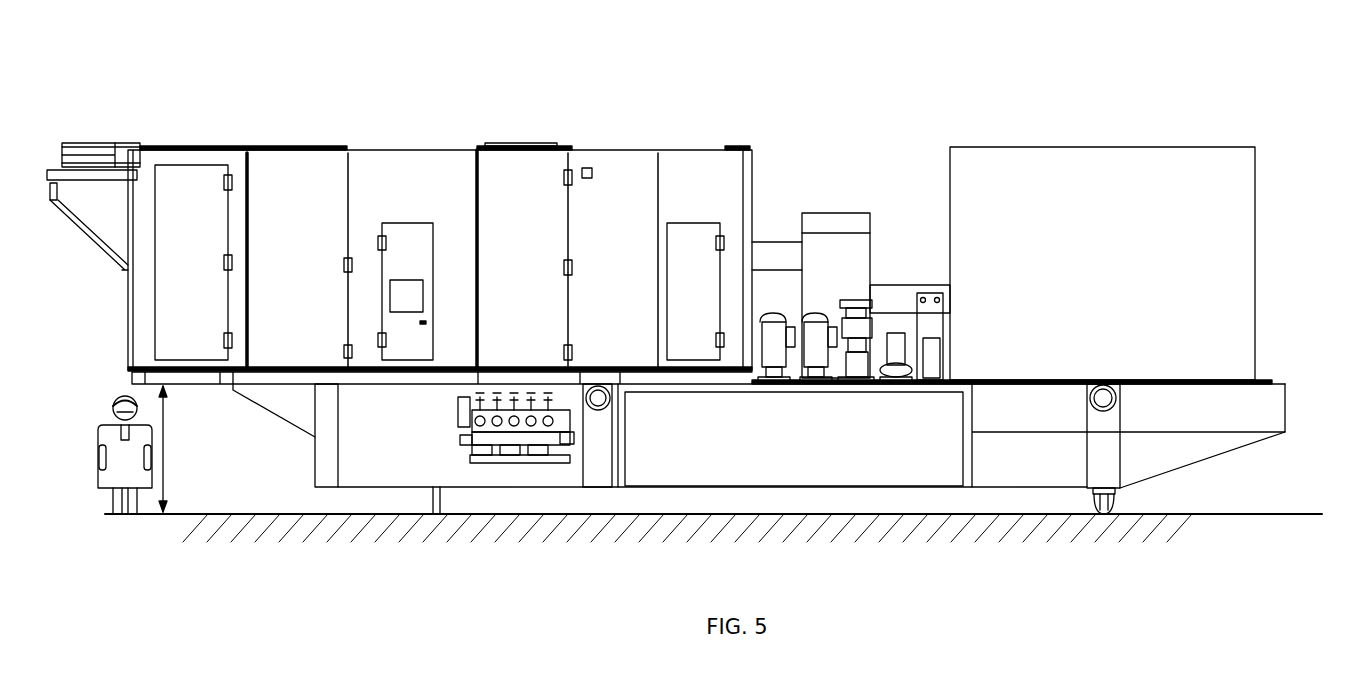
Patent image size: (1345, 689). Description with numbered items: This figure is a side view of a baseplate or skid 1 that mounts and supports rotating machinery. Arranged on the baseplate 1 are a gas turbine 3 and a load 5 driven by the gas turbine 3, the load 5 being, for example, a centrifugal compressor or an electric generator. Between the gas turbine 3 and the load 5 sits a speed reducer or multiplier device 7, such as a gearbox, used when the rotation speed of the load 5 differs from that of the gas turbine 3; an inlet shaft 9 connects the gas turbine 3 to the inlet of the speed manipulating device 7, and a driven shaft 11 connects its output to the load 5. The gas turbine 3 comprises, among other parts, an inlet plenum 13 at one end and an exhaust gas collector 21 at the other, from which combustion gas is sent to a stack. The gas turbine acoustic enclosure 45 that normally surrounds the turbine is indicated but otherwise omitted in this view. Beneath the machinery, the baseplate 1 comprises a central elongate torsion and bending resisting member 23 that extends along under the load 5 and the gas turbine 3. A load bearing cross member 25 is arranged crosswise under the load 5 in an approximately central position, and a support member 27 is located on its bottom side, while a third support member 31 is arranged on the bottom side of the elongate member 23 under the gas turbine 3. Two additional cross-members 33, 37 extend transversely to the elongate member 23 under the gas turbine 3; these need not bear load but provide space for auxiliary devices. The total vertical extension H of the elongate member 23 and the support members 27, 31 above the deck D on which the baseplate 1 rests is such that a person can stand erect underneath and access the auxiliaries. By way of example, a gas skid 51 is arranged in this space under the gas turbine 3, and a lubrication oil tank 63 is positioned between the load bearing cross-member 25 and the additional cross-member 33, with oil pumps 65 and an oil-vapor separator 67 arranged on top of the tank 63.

The baseplate 1 is at (1283, 468).
The gas turbine 3 is at (585, 122).
The load 5 is at (1078, 160).
The speed reducer or multiplier device 7 is at (838, 225).
The inlet shaft 9 is at (772, 248).
The driven shaft 11 is at (896, 297).
The inlet plenum 13 is at (186, 190).
The exhaust gas collector 21 is at (688, 170).
The central elongate torsion and bending resisting member 23 is at (396, 477).
The load bearing cross member 25 is at (1105, 465).
The support member 27 is at (1110, 499).
The third support member 31 is at (423, 504).
The additional cross-member 33 is at (595, 470).
The additional cross-member 37 is at (320, 460).
The gas turbine acoustic enclosure 45 is at (320, 112).
The gas skid 51 is at (445, 430).
The lubrication oil tank 63 is at (787, 467).
The oil pumps 65 is at (810, 318).
The oil-vapor separator 67 is at (943, 310).
The total vertical extension H is at (165, 440).
The deck D is at (222, 512).